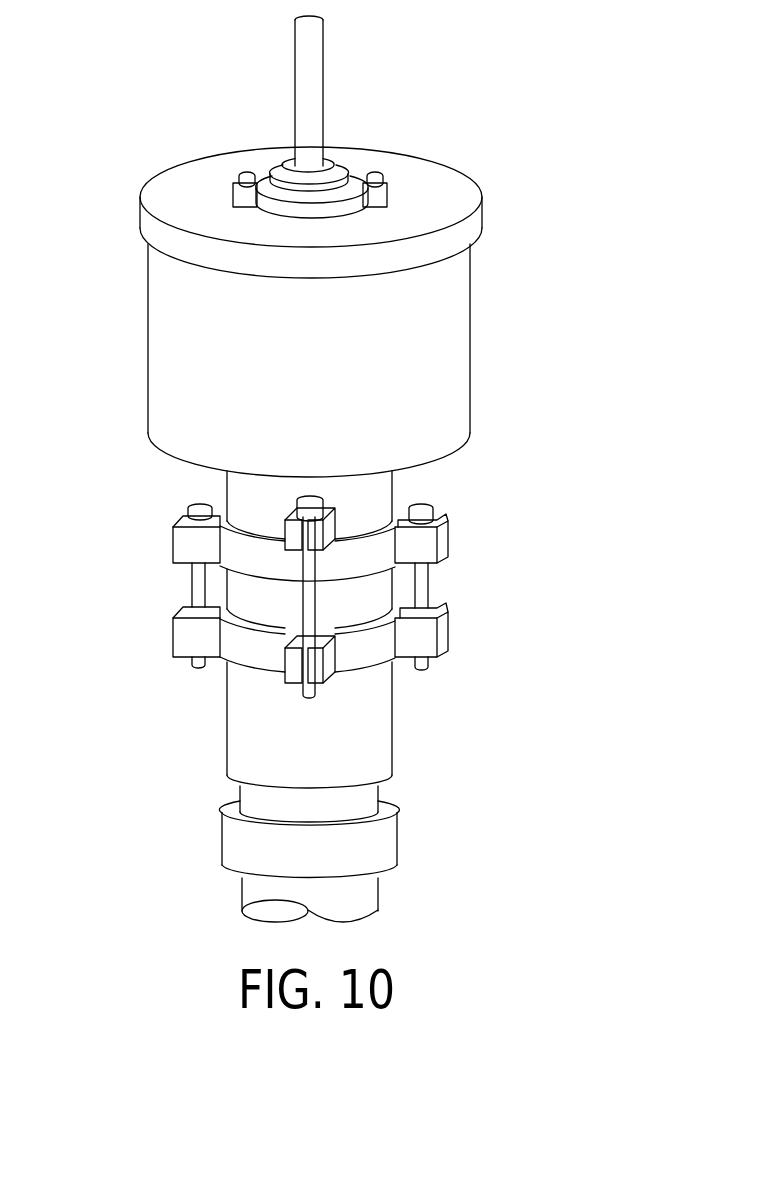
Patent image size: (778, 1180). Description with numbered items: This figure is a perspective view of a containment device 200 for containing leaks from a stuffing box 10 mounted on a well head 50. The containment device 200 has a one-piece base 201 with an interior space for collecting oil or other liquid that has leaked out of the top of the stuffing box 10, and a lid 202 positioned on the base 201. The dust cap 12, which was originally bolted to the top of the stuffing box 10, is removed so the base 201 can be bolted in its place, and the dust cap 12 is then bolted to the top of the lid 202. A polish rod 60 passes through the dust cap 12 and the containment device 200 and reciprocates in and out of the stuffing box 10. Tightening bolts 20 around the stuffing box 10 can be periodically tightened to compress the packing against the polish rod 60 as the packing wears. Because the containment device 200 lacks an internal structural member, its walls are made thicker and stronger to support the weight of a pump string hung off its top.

The containment device 200 is at (560, 235).
The polish rod 60 is at (323, 53).
The dust cap 12 is at (338, 168).
The lid 202 is at (155, 223).
The one-piece base 201 is at (457, 382).
The stuffing box 10 is at (463, 623).
The tightening bolts 20 is at (192, 588).
The well head 50 is at (415, 826).